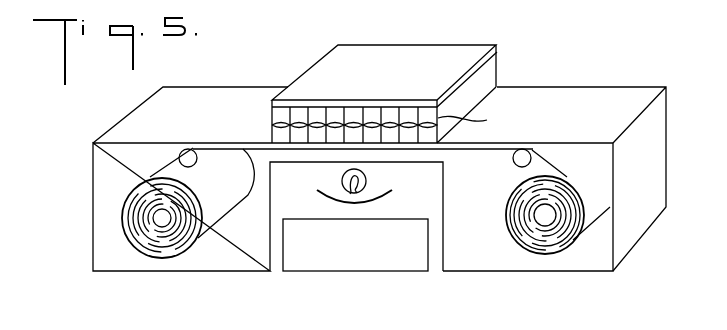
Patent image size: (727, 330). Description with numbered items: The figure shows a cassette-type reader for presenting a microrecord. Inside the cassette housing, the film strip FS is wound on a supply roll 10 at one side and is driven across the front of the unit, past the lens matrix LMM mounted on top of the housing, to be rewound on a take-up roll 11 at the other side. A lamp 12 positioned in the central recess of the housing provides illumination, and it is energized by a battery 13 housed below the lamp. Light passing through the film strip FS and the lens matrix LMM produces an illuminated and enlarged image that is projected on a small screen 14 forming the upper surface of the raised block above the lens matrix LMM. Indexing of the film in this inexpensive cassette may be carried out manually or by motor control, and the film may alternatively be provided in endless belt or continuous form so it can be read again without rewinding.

The supply roll 10 is at (547, 220).
The take-up roll 11 is at (168, 220).
The lamp 12 is at (367, 178).
The battery 13 is at (320, 260).
The screen 14 is at (488, 46).
The film strip FS is at (483, 152).
The lens matrix LMM is at (482, 121).